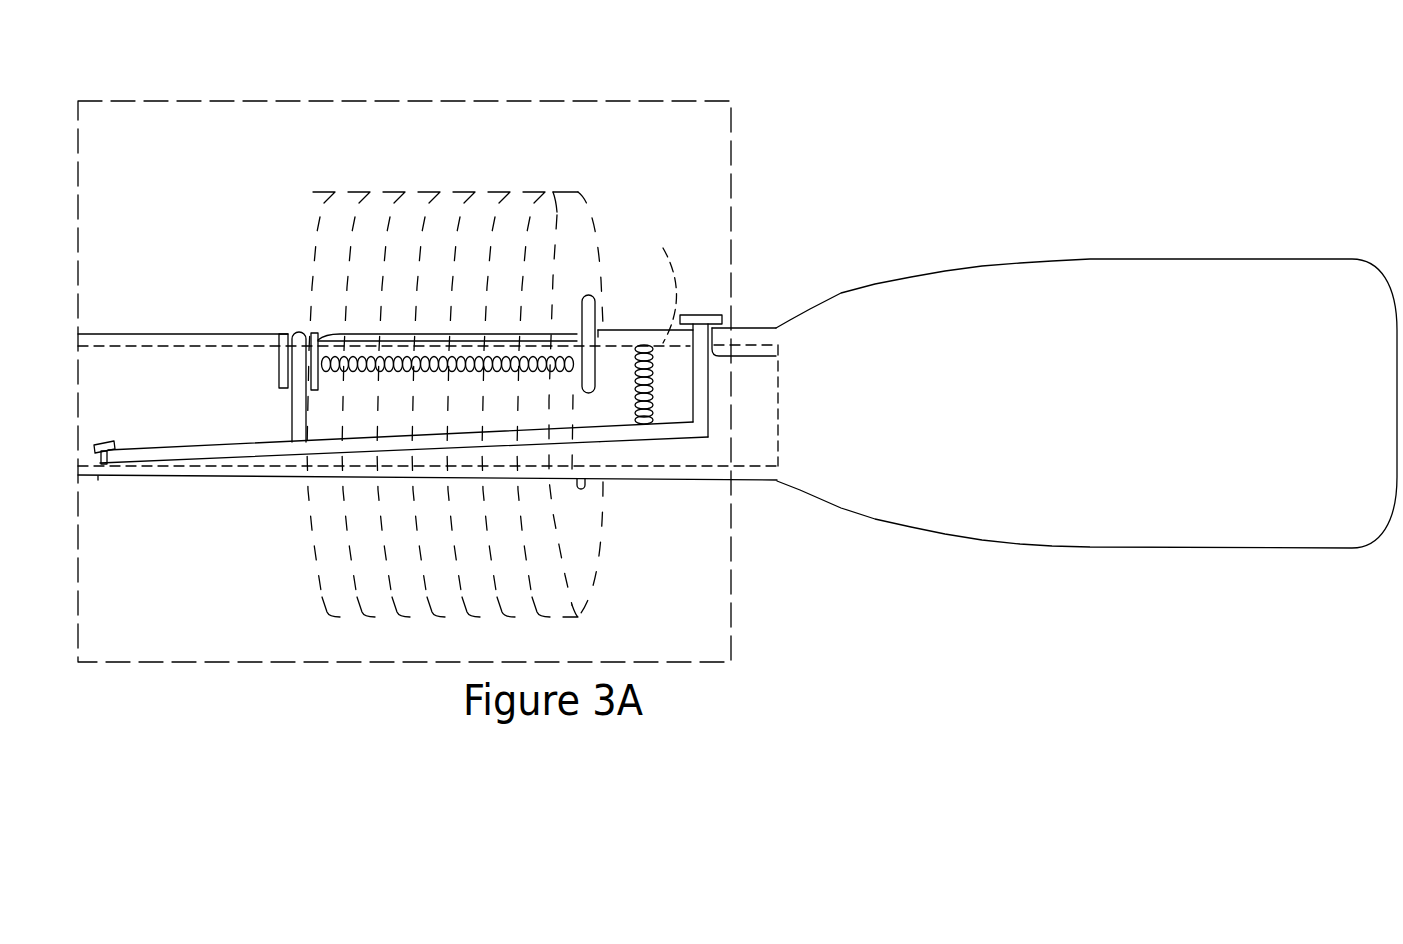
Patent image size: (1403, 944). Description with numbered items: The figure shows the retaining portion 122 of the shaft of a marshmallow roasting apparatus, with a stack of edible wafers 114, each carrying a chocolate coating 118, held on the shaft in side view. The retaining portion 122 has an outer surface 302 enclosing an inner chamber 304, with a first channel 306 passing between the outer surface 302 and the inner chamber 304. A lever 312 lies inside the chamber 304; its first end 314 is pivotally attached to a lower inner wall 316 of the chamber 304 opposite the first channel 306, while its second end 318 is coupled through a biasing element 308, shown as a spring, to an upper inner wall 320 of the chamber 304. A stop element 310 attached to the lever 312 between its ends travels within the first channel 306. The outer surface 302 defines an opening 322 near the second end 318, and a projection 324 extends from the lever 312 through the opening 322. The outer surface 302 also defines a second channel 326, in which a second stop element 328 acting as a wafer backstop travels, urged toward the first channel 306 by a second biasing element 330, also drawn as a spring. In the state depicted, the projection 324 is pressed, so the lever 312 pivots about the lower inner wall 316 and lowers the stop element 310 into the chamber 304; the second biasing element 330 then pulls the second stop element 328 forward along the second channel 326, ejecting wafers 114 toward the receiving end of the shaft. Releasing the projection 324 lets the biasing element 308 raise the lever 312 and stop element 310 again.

The retaining portion 122 is at (365, 101).
The chocolate coating 118 is at (320, 220).
The edible wafer 114 is at (553, 192).
The second biasing element 330 is at (418, 356).
The outer surface 302 is at (103, 333).
The first channel 306 is at (287, 388).
The stop element 310 is at (292, 334).
The second channel 326 is at (357, 333).
The second stop element 328 is at (596, 310).
The upper inner wall 320 is at (645, 322).
The projection 324 is at (695, 315).
The biasing element 308 is at (635, 360).
The opening 322 is at (776, 357).
The inner chamber 304 is at (781, 400).
The lever 312 is at (194, 456).
The second end 318 is at (678, 437).
The first end 314 is at (113, 441).
The lower inner wall 316 is at (98, 477).